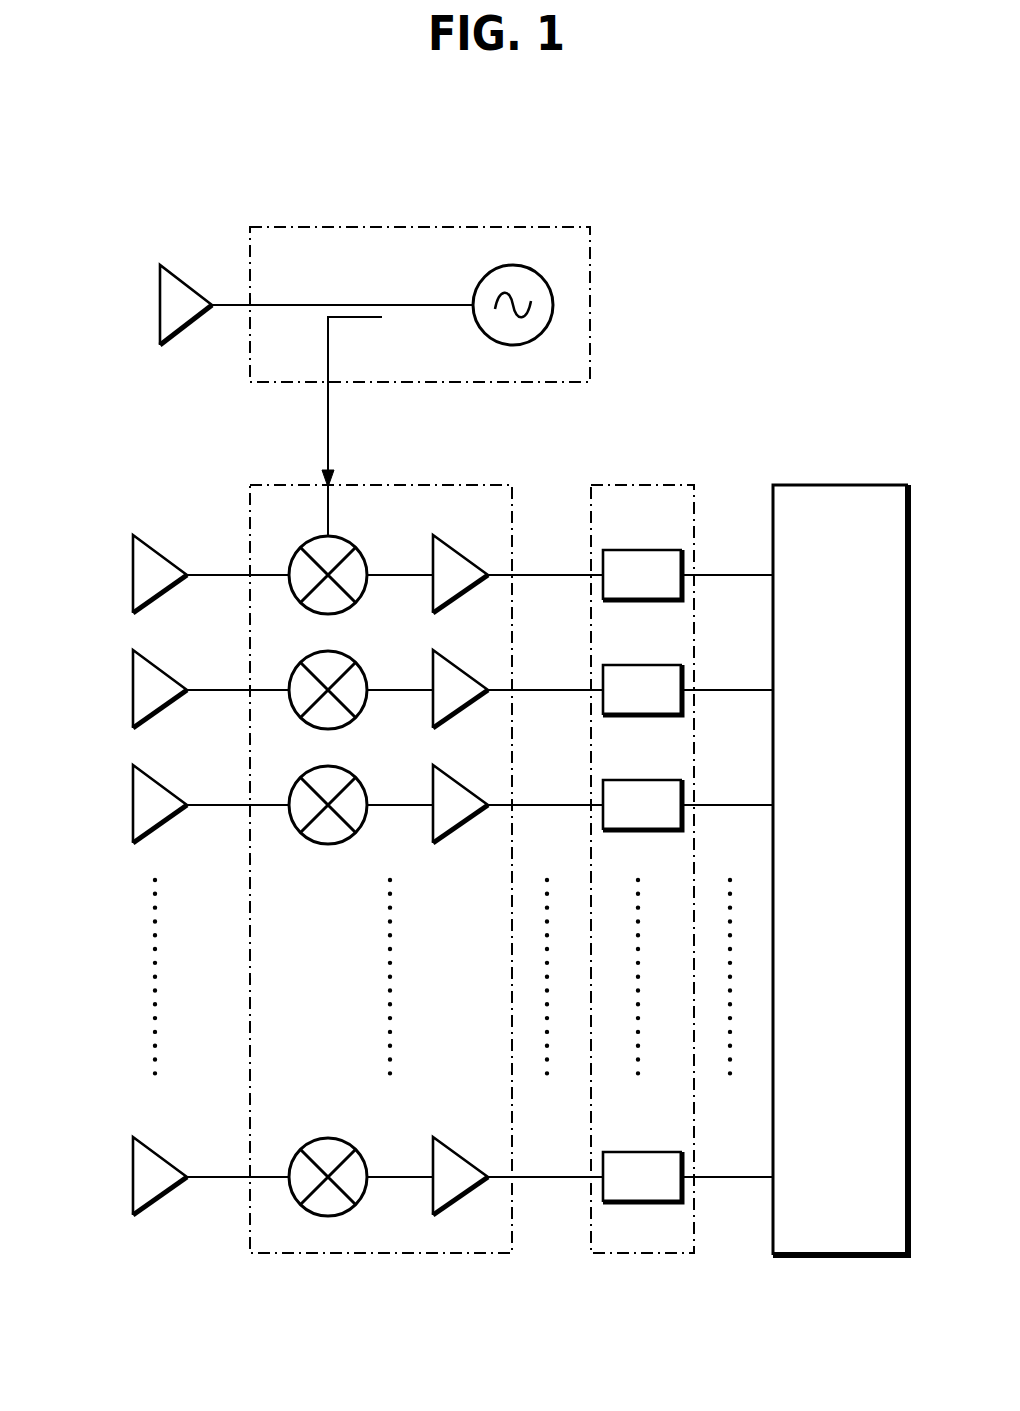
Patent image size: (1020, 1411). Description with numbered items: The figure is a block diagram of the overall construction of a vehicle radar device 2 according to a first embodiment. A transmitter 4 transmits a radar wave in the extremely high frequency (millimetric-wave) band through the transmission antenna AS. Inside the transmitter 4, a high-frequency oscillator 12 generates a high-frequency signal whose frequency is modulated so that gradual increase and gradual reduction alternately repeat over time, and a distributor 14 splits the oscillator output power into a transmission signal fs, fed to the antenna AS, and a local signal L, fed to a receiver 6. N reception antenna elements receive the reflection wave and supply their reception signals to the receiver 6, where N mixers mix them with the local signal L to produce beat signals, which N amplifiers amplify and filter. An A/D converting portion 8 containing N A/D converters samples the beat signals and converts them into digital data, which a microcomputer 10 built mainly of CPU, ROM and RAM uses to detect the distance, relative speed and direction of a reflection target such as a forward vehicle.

The radar device 2 is at (762, 190).
The transmitter 4 is at (547, 227).
The receiver 6 is at (468, 485).
The A/D converting portion 8 is at (638, 485).
The microcomputer 10 is at (832, 485).
The high-frequency oscillator 12 is at (482, 276).
The distributor 14 is at (360, 321).